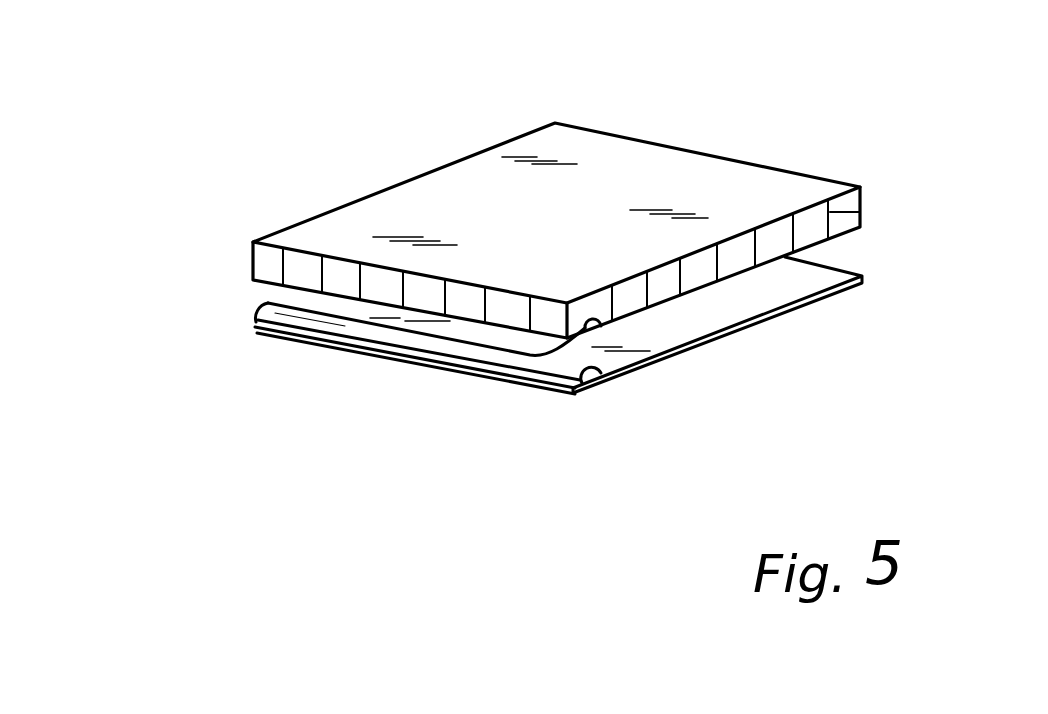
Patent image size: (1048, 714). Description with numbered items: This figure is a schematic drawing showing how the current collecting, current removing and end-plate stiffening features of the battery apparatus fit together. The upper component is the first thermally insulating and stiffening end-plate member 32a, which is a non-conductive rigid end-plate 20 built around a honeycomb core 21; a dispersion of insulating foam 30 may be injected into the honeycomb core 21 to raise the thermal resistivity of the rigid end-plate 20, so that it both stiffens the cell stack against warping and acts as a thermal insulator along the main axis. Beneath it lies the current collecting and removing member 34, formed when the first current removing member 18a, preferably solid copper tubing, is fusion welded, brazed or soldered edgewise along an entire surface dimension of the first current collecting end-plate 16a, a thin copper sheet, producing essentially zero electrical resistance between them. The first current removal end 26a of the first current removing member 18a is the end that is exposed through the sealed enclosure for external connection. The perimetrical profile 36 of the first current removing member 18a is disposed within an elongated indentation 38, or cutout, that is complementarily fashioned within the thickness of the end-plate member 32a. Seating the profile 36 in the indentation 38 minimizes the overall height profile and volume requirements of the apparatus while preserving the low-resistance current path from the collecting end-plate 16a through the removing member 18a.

The first current collecting end-plate 16a is at (818, 277).
The first current removing member 18a is at (265, 302).
The rigid end-plate 20 is at (812, 175).
The honeycomb core 21 is at (862, 211).
The first current removal end 26a is at (598, 381).
The insulating foam 30 is at (377, 287).
The first thermally insulating and stiffening end-plate member 32a is at (732, 157).
The current collecting and removing member 34 is at (742, 343).
The perimetrical profile 36 is at (548, 390).
The elongated indentation 38 is at (493, 377).